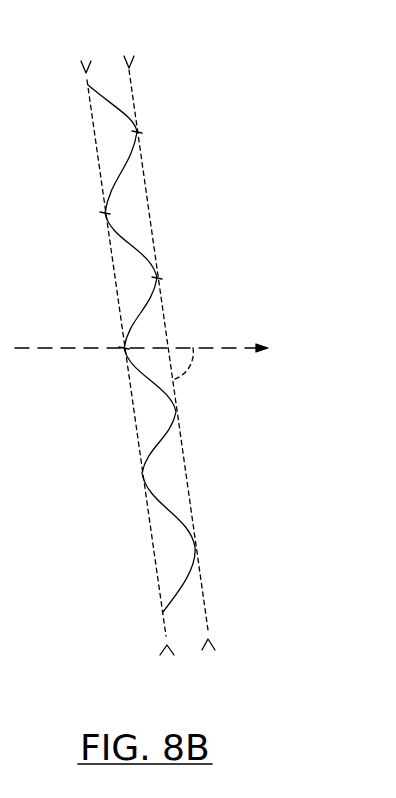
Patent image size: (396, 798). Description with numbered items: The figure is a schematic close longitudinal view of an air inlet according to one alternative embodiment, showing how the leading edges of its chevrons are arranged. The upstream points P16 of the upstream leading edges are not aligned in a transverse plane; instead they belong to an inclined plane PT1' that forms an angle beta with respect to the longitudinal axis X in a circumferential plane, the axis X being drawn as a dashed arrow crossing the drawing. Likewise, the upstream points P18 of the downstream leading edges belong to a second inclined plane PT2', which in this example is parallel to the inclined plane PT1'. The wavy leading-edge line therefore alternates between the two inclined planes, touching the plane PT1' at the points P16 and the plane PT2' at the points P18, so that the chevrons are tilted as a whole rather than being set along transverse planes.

The inclined plane PT1' is at (115, 359).
The inclined plane PT2' is at (181, 352).
The upstream point of downstream leading edge P18 is at (166, 190).
The upstream point of upstream leading edge P16 is at (93, 269).
The longitudinal axis X is at (157, 350).